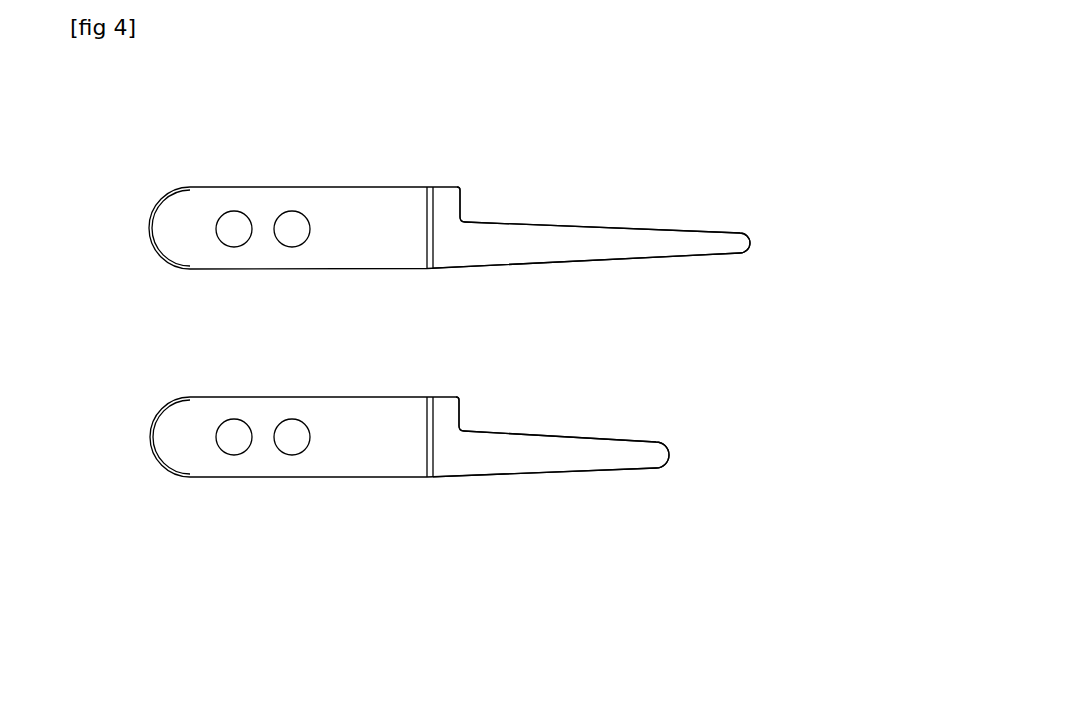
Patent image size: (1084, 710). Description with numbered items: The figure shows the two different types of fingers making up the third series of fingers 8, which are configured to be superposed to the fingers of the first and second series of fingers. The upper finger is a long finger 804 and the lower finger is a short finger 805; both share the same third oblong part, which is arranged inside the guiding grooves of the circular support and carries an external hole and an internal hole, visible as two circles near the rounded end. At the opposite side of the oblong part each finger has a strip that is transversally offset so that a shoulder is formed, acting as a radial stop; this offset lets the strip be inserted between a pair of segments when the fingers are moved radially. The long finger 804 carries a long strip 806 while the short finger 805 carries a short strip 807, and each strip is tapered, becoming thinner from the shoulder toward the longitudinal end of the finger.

The third series of fingers 8 is at (509, 344).
The long finger 804 is at (520, 181).
The short finger 805 is at (503, 483).
The long strip 806 is at (678, 248).
The short strip 807 is at (590, 452).